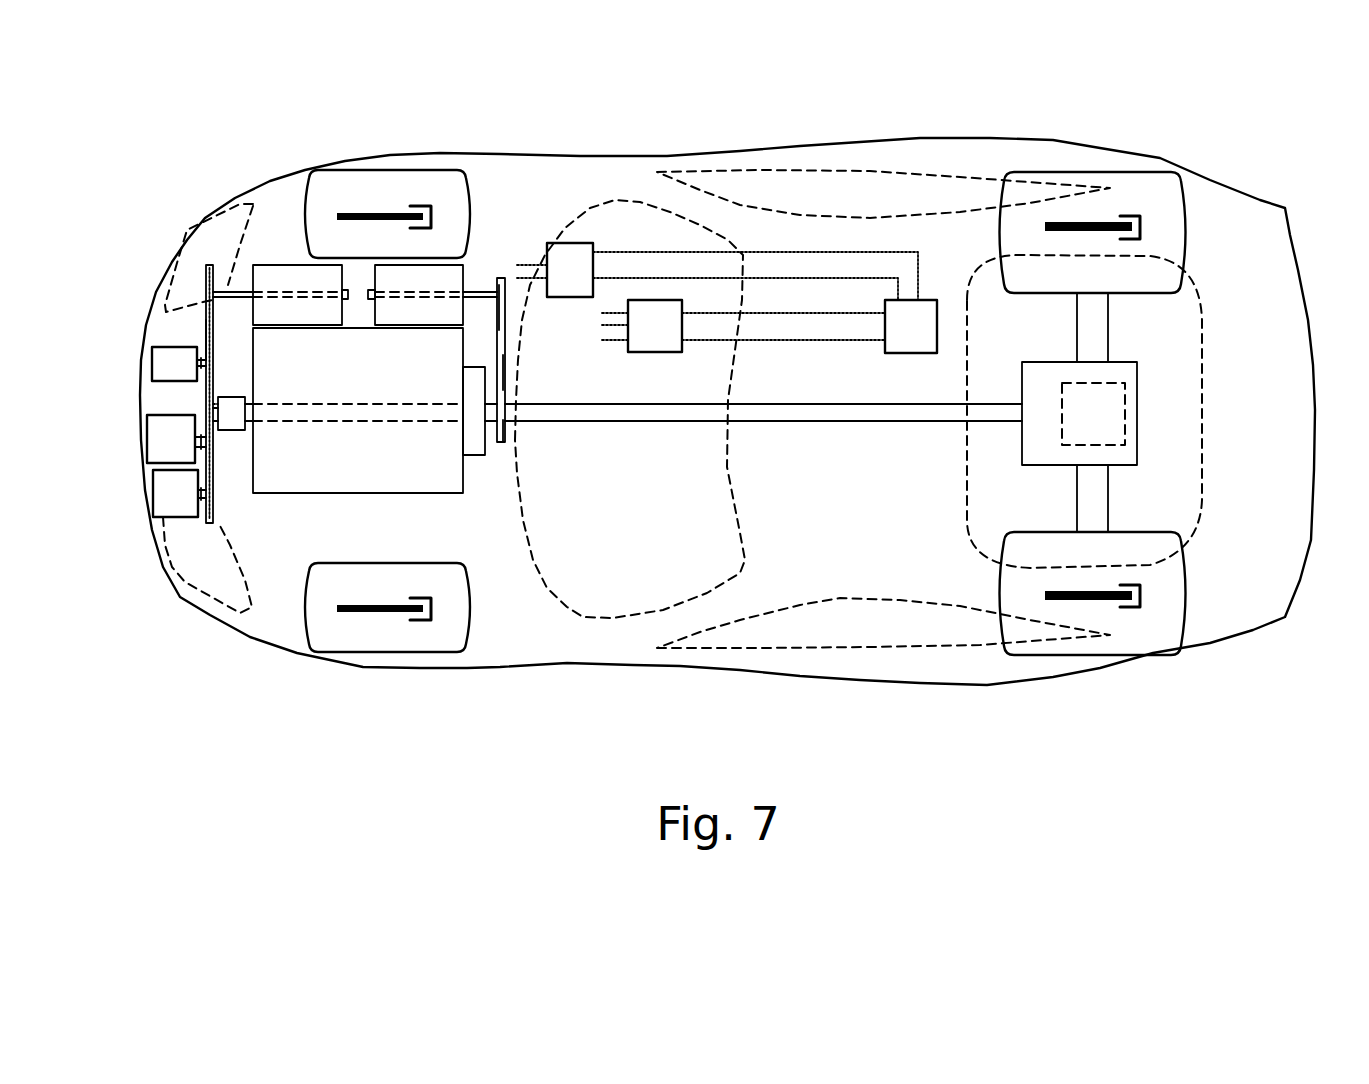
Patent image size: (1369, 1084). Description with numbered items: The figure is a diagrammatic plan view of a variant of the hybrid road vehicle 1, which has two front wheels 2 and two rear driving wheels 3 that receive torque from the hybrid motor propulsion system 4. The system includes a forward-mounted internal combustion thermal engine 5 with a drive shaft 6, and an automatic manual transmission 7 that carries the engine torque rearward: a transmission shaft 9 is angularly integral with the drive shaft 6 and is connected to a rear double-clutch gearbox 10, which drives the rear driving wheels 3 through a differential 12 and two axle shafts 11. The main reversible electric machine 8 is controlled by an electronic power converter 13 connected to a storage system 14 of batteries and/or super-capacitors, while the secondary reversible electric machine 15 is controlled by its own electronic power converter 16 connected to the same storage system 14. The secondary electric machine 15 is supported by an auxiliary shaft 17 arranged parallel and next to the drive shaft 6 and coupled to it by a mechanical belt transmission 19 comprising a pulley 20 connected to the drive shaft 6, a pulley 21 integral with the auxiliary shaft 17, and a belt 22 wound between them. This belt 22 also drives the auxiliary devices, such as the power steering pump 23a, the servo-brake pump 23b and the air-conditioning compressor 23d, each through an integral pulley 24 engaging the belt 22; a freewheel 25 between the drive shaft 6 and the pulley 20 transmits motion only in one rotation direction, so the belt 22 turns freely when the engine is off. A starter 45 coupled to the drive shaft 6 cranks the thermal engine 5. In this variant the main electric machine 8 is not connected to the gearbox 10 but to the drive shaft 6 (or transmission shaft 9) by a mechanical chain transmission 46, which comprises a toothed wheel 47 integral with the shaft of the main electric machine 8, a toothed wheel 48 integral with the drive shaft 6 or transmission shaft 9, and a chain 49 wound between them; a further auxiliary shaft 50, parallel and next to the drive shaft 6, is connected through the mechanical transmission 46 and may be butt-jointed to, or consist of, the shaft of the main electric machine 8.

The road vehicle 1 is at (1258, 706).
The front wheels 2 is at (323, 188).
The rear driving wheels 3 is at (1170, 188).
The hybrid motor propulsion system 4 is at (213, 172).
The internal combustion thermal engine 5 is at (385, 468).
The drive shaft 6 is at (313, 412).
The automatic manual transmission 7 is at (758, 122).
The main reversible electric machine 8 is at (441, 283).
The transmission shaft 9 is at (778, 417).
The double-clutch gearbox 10 is at (1035, 450).
The axle shafts 11 is at (1098, 312).
The differential 12 is at (1093, 414).
The electronic power converter 13 is at (743, 326).
The storage system 14 is at (911, 326).
The secondary reversible electric machine 15 is at (312, 270).
The electronic power converter 16 is at (717, 271).
The auxiliary shaft 17 is at (240, 298).
The mechanical belt transmission 19 is at (125, 337).
The pulley 20 is at (213, 409).
The pulley 21 is at (213, 270).
The belt 22 is at (210, 338).
The power steering pump 23a is at (179, 364).
The compressor 23d is at (176, 439).
The servo-brake pump 23b is at (179, 493).
The pulley 24 is at (211, 367).
The freewheel 25 is at (236, 424).
The starter 45 is at (472, 450).
The mechanical chain transmission 46 is at (530, 335).
The toothed wheel 47 is at (499, 277).
The toothed wheel 48 is at (507, 440).
The chain 49 is at (505, 372).
The auxiliary shaft 50 is at (473, 297).